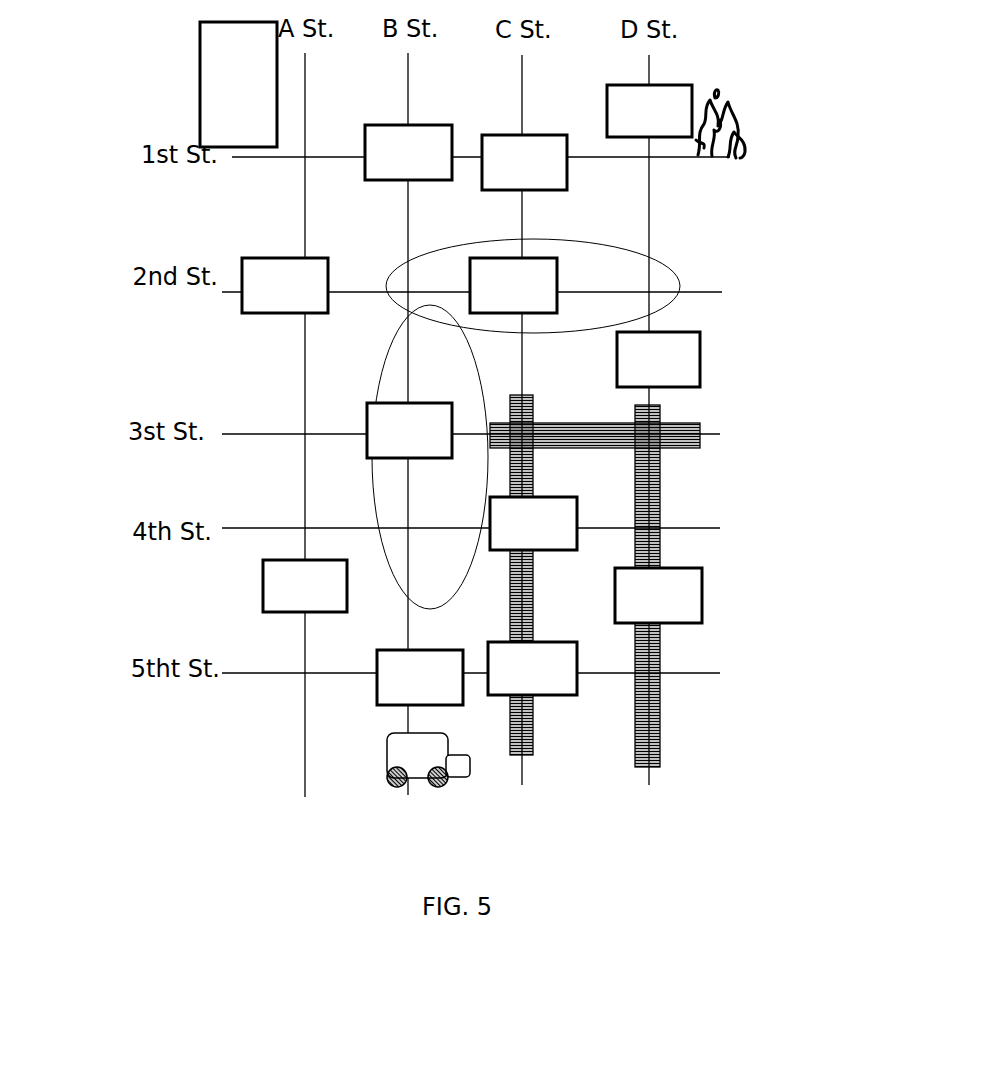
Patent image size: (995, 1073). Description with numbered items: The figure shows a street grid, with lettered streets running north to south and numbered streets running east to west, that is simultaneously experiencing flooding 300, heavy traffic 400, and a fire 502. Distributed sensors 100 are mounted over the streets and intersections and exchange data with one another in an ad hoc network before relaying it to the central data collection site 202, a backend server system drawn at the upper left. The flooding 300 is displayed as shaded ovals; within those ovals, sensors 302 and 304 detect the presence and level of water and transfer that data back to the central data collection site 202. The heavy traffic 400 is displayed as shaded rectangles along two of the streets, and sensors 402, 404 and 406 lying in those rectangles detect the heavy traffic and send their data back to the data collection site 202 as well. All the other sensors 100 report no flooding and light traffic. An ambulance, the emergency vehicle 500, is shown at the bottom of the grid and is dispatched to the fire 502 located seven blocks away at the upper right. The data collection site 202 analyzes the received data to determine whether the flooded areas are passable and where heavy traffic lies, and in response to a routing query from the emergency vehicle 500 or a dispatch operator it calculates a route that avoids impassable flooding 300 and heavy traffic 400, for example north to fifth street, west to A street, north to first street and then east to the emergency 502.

The distributed sensor 100 is at (471, 395).
The central data collection site 202 is at (238, 84).
The flooding 300 is at (598, 260).
The sensor 302 is at (513, 285).
The sensor 304 is at (409, 430).
The heavy traffic 400 is at (527, 477).
The sensor 402 is at (533, 523).
The sensor 404 is at (658, 595).
The sensor 406 is at (532, 668).
The emergency vehicle 500 is at (385, 757).
The fire 502 is at (752, 113).